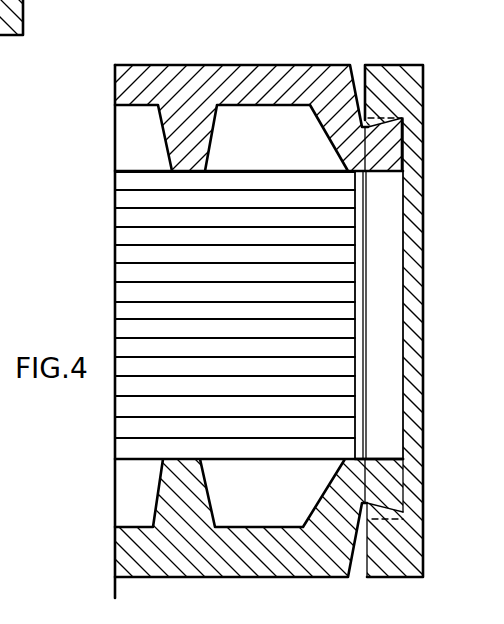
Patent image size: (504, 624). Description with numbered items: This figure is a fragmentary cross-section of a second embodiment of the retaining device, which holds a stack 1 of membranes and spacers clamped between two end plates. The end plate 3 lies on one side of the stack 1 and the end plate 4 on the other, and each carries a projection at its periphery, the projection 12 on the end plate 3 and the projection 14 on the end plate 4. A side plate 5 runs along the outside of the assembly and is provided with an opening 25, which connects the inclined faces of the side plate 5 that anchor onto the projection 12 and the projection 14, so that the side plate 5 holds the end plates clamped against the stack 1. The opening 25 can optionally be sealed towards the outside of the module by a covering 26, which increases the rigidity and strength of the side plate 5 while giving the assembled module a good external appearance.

The stack 1 is at (158, 315).
The end plate 3 is at (199, 92).
The end plate 4 is at (218, 540).
The side plate 5 is at (424, 276).
The projection 12 is at (388, 143).
The projection 14 is at (380, 487).
The opening 25 is at (382, 248).
The covering 26 is at (407, 358).